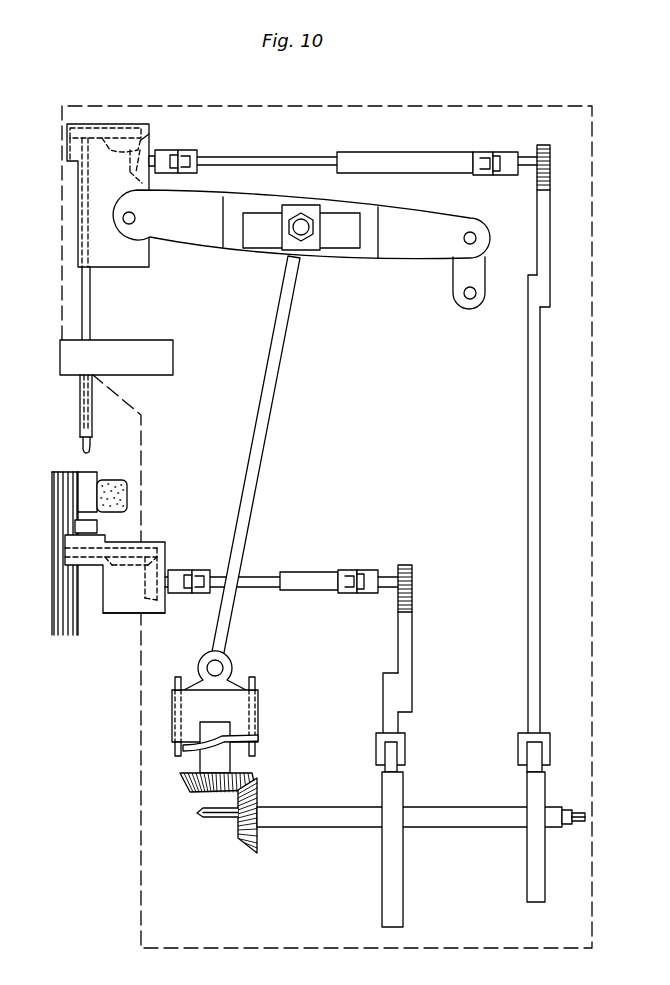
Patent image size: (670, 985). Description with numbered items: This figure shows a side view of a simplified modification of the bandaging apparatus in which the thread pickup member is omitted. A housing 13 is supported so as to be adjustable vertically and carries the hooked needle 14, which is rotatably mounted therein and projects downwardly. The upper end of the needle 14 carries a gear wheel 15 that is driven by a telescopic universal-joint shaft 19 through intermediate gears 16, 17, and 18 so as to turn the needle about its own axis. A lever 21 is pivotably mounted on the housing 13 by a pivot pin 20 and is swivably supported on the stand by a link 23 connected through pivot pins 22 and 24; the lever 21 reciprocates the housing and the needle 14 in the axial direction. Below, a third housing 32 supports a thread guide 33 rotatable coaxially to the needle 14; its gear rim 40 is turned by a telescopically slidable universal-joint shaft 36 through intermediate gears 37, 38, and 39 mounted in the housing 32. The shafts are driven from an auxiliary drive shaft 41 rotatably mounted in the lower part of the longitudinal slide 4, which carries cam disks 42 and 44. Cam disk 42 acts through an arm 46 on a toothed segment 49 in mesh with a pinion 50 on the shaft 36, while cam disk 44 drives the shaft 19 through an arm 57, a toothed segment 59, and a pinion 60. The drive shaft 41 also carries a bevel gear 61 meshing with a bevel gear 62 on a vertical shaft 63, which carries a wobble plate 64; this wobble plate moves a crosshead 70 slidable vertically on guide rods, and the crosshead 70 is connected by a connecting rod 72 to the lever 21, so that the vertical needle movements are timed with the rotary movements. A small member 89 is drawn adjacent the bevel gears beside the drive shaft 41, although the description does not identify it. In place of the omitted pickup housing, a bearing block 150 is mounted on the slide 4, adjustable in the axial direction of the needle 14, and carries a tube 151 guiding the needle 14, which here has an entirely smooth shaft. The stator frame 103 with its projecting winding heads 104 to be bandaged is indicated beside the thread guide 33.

The longitudinal slide 4 is at (596, 914).
The housing 13 is at (143, 263).
The hooked needle 14 is at (90, 312).
The gear wheel 15 is at (95, 128).
The intermediate gear 16 is at (141, 128).
The intermediate gear 17 is at (150, 134).
The intermediate gear 18 is at (160, 152).
The universal-joint shaft 19 is at (285, 159).
The pivot pin 20 is at (134, 216).
The lever 21 is at (211, 252).
The pivot pin 22 is at (470, 300).
The link 23 is at (456, 273).
The pivot pin 24 is at (478, 238).
The third housing 32 is at (165, 609).
The thread guide 33 is at (97, 527).
The universal-joint shaft 36 is at (321, 576).
The intermediate gear 37 is at (142, 624).
The intermediate gear 38 is at (111, 574).
The intermediate gear 39 is at (165, 547).
The gear rim 40 is at (64, 552).
The auxiliary drive shaft 41 is at (317, 807).
The cam disk 42 is at (381, 899).
The cam disk 44 is at (527, 866).
The arm 46 is at (387, 712).
The toothed segment 49 is at (407, 636).
The pinion 50 is at (413, 577).
The arm 57 is at (540, 498).
The toothed segment 59 is at (545, 246).
The pinion 60 is at (554, 157).
The bevel gear 61 is at (255, 846).
The bevel gear 62 is at (192, 790).
The vertical shaft 63 is at (212, 757).
The wobble plate 64 is at (244, 742).
The crosshead 70 is at (246, 718).
The connecting rod 72 is at (245, 522).
The pin 89 is at (217, 821).
The stator frame 103 is at (56, 477).
The winding heads 104 is at (119, 478).
The bearing block 150 is at (166, 360).
The tube 151 is at (81, 424).